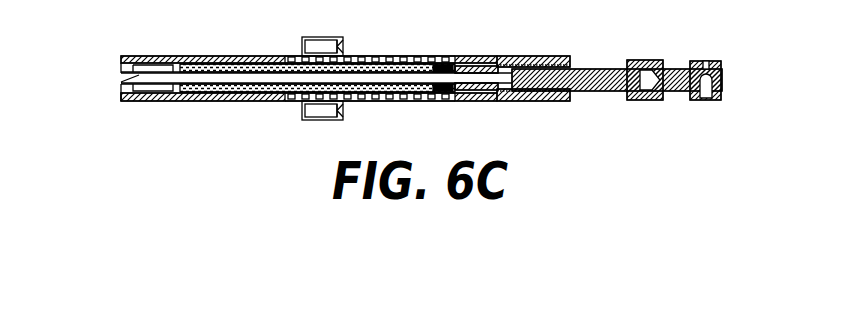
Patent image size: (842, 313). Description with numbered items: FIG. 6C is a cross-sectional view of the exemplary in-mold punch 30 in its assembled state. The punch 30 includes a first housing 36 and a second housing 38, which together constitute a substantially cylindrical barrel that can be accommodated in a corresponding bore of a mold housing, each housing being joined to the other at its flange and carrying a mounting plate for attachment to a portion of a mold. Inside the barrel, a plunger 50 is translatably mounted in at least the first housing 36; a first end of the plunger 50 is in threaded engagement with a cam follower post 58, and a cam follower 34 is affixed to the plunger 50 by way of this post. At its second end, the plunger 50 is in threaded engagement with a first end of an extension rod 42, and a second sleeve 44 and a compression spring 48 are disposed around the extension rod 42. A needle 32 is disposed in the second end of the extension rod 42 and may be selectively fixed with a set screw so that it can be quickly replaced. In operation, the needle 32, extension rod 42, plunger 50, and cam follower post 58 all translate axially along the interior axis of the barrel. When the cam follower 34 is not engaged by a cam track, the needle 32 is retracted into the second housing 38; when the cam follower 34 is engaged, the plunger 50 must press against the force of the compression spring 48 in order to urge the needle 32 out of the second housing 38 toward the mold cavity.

The punch 30 is at (748, 99).
The needle 32 is at (152, 78).
The cam follower 34 is at (702, 61).
The first housing 36 is at (417, 55).
The second housing 38 is at (227, 103).
The extension rod 42 is at (242, 63).
The second sleeve 44 is at (282, 99).
The compression spring 48 is at (397, 56).
The plunger 50 is at (600, 67).
The cam follower post 58 is at (647, 101).